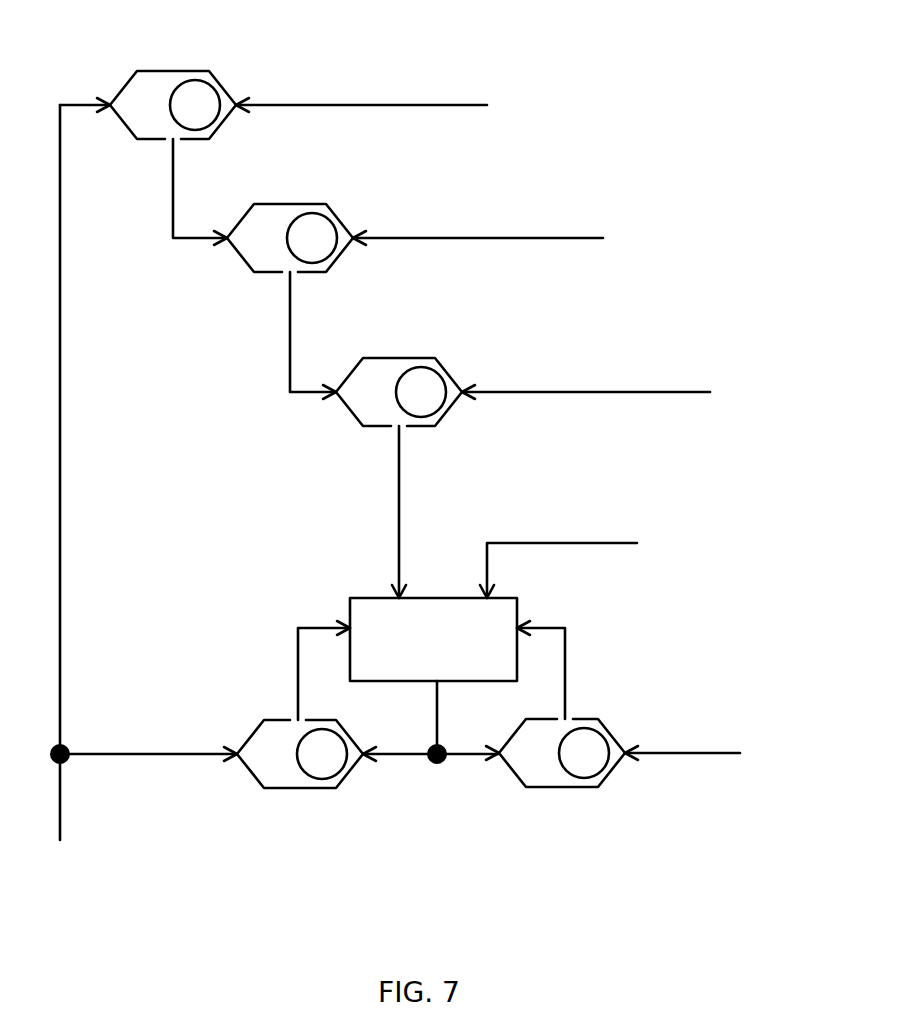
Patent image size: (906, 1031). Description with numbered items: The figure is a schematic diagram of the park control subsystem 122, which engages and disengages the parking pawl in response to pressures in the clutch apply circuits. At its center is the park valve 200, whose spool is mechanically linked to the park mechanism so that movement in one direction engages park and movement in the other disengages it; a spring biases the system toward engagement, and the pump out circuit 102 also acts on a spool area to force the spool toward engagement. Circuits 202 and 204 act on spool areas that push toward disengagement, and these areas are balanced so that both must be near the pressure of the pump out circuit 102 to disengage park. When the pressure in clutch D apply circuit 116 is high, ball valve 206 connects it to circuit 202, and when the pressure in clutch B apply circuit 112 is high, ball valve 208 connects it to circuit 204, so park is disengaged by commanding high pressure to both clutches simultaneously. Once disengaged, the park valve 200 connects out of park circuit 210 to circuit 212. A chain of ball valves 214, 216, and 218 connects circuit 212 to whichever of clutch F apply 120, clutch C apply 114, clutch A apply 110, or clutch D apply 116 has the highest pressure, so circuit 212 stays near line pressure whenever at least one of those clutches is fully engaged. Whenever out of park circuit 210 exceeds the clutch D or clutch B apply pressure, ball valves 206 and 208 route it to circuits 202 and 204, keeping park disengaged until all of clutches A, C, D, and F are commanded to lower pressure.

The park control subsystem 122 is at (665, 65).
The clutch F apply circuit 120 is at (350, 70).
The clutch C apply circuit 114 is at (466, 202).
The clutch A apply circuit 110 is at (573, 355).
The pump output circuit 102 is at (587, 543).
The clutch D apply circuit 116 is at (62, 797).
The clutch B apply circuit 112 is at (673, 757).
The out of park circuit 210 is at (413, 755).
The park valve 200 is at (422, 597).
The circuit 202 is at (298, 650).
The circuit 204 is at (567, 657).
The ball valve 206 is at (252, 730).
The ball valve 208 is at (605, 727).
The circuit 212 is at (400, 517).
The ball valve 214 is at (130, 130).
The ball valve 216 is at (242, 258).
The ball valve 218 is at (347, 405).